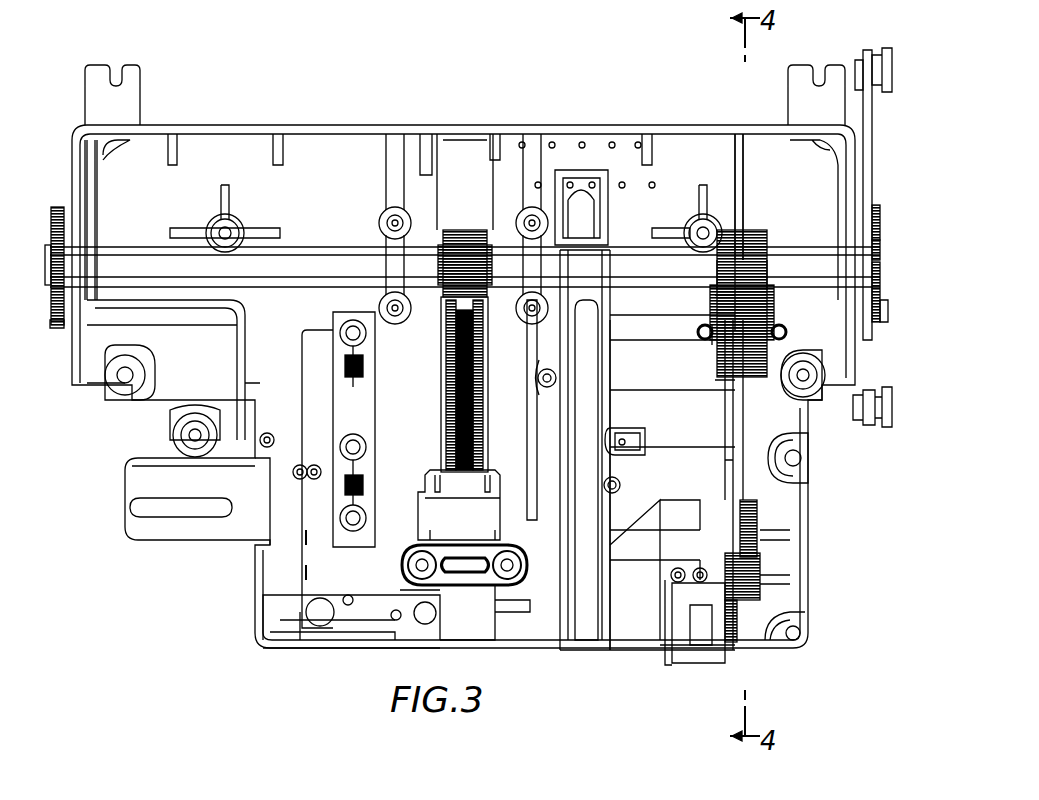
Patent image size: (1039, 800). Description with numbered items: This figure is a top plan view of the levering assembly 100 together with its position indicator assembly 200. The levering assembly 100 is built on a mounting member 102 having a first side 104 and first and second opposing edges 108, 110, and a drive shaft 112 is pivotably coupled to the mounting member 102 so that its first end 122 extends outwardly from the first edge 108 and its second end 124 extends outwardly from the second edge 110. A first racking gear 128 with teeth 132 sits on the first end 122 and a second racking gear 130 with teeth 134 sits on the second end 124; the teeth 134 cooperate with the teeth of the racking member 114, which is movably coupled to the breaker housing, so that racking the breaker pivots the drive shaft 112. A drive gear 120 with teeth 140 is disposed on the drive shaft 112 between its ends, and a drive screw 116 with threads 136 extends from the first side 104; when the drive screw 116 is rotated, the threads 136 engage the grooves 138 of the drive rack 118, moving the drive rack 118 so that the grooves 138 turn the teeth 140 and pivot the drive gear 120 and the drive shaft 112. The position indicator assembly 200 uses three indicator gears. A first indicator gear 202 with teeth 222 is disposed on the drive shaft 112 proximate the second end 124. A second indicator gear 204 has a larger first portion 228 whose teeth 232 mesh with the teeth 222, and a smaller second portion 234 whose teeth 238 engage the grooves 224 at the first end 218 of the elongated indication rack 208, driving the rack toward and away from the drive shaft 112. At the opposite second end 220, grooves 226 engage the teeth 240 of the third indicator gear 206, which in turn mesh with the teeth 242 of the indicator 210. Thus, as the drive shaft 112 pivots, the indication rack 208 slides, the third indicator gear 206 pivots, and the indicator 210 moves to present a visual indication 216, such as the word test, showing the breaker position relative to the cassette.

The levering assembly 100 is at (222, 631).
The mounting member 102 is at (222, 103).
The first side 104 is at (325, 655).
The first edge 108 is at (75, 380).
The second edge 110 is at (860, 350).
The drive shaft 112 is at (298, 245).
The racking member 114 is at (872, 128).
The drive screw 116 is at (425, 493).
The drive rack 118 is at (427, 365).
The drive gear 120 is at (458, 210).
The first end 122 is at (88, 222).
The second end 124 is at (883, 312).
The first racking gear 128 is at (57, 200).
The second racking gear 130 is at (883, 242).
The teeth 132 is at (48, 302).
The teeth 134 is at (870, 230).
The threads 136 is at (445, 415).
The grooves 138 is at (440, 330).
The teeth 140 is at (485, 235).
The position indicator assembly 200 is at (704, 170).
The first indicator gear 202 is at (754, 215).
The second indicator gear 204 is at (780, 301).
The third indicator gear 206 is at (763, 567).
The indication rack 208 is at (728, 472).
The indicator 210 is at (686, 672).
The visual indication 216 is at (680, 635).
The first end 218 is at (708, 278).
The second end 220 is at (773, 547).
The teeth 222 is at (768, 265).
The grooves 224 is at (712, 298).
The grooves 226 is at (768, 520).
The first portion 228 is at (770, 390).
The teeth 232 is at (780, 330).
The second portion 234 is at (708, 355).
The teeth 238 is at (700, 332).
The teeth 240 is at (800, 618).
The teeth 242 is at (742, 640).